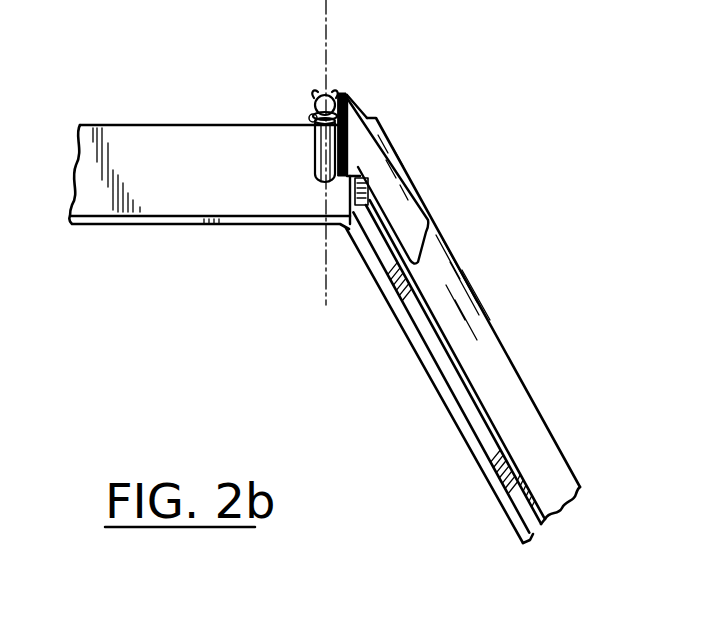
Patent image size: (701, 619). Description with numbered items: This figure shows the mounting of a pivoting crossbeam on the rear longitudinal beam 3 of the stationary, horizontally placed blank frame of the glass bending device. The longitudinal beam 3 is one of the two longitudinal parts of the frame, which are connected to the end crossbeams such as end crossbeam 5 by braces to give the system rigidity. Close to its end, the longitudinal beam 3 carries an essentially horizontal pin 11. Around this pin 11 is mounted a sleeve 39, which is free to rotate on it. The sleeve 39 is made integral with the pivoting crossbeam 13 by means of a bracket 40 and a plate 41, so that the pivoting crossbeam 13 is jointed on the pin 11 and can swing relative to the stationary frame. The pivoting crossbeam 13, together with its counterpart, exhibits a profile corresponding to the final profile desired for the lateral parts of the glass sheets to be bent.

The longitudinal beam 3 is at (180, 150).
The end crossbeam 5 is at (474, 445).
The pin 11 is at (330, 96).
The pivoting crossbeam 13 is at (466, 323).
The sleeve 39 is at (316, 156).
The bracket 40 is at (352, 166).
The plate 41 is at (400, 203).